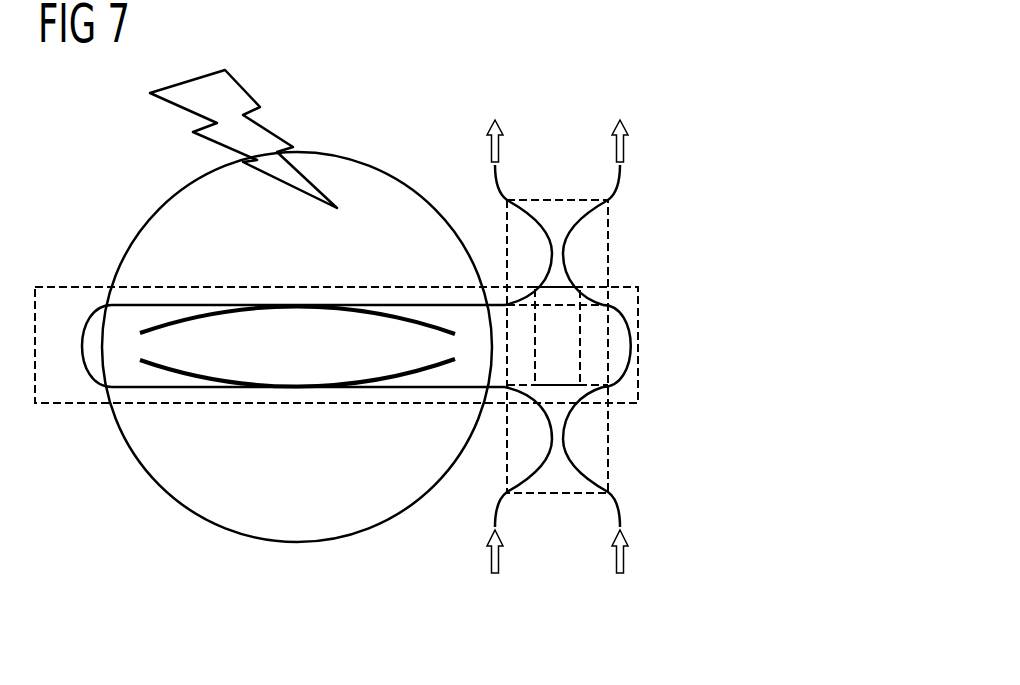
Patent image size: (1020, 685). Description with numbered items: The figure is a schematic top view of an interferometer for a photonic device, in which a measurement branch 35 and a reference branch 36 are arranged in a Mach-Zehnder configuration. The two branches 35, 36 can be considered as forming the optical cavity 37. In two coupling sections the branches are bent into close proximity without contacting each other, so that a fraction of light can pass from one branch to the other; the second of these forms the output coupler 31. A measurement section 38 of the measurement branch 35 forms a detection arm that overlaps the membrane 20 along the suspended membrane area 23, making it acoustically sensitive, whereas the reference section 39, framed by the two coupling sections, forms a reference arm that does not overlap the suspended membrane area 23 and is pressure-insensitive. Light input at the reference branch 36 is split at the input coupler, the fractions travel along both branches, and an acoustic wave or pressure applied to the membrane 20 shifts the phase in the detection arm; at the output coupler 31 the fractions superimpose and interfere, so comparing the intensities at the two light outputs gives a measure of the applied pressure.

The membrane 20 is at (365, 530).
The suspended membrane area 23 is at (135, 343).
The output coupler 31 is at (608, 255).
The measurement branch 35 is at (142, 388).
The reference branch 36 is at (620, 513).
The optical cavity 37 is at (303, 350).
The measurement section 38 is at (302, 288).
The reference section 39 is at (638, 350).